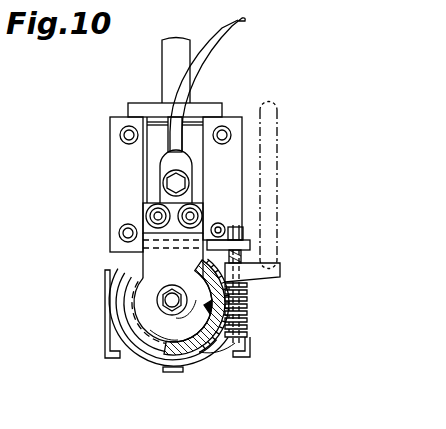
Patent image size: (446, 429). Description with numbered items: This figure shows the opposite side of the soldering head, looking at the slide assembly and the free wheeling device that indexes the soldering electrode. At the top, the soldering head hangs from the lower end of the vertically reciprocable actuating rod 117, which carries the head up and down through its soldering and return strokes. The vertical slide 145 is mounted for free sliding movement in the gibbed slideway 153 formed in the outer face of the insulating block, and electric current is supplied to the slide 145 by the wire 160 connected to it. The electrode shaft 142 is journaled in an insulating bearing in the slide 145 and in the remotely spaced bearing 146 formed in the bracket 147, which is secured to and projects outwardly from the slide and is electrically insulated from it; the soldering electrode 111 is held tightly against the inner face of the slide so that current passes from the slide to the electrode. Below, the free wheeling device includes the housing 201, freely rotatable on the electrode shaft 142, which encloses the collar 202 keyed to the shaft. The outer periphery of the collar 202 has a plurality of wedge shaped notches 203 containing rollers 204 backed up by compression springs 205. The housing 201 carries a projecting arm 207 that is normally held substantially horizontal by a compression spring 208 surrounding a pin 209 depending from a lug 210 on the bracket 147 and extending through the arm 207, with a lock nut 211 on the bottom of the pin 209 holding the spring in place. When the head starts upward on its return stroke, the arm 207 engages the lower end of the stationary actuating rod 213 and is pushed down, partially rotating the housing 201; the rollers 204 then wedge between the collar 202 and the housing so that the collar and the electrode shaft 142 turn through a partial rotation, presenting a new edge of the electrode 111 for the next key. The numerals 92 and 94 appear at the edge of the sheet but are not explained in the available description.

The actuating rod 117 is at (162, 55).
The wire 160 is at (203, 50).
The gibbed slideway 153 is at (138, 157).
The stationary actuating rod 213 is at (278, 160).
The vertical slide 145 is at (152, 188).
The bracket 147 is at (143, 205).
The bearing 146 is at (150, 279).
The electrode shaft 142 is at (172, 293).
The housing 201 is at (128, 312).
The lug 210 is at (240, 245).
The projecting arm 207 is at (267, 272).
The pin 209 is at (245, 293).
The compression spring 208 is at (247, 310).
The lock nut 211 is at (250, 336).
The compression springs 205 is at (221, 347).
The rollers 204 is at (214, 355).
The wedge shaped notches 203 is at (192, 342).
The collar 202 is at (163, 341).
The soldering electrode 111 is at (143, 360).
The frame member 92 is at (32, 415).
The frame member 94 is at (105, 422).